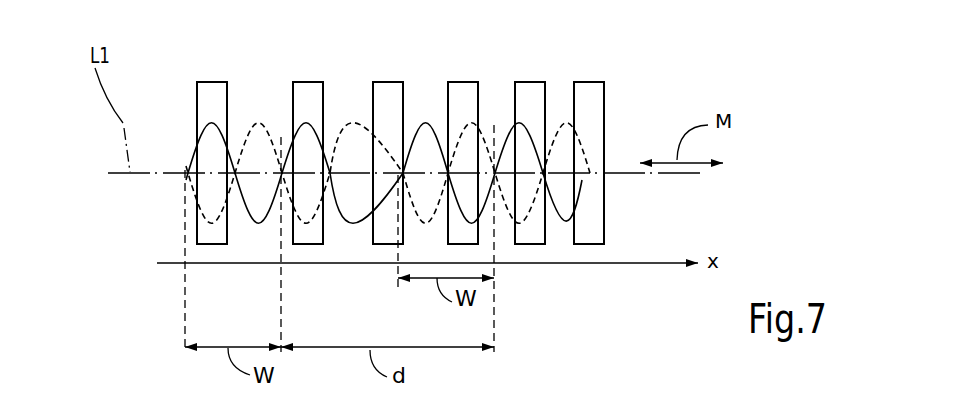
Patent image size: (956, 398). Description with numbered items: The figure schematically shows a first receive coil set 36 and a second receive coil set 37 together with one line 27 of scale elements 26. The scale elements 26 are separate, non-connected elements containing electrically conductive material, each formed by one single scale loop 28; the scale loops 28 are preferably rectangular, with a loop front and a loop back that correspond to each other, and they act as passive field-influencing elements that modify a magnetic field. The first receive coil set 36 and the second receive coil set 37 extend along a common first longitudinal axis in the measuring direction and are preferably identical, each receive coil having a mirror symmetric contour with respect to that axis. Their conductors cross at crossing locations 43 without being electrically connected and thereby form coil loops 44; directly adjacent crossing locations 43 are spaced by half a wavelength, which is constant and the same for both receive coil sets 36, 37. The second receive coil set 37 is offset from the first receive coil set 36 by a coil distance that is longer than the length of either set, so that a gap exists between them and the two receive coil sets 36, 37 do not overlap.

The scale element 26 is at (537, 83).
The line of scale elements 27 is at (622, 97).
The scale loop 28 is at (590, 83).
The first receive coil set 36 is at (191, 133).
The second receive coil set 37 is at (429, 118).
The crossing location 43 is at (234, 180).
The coil loop 44 is at (306, 156).